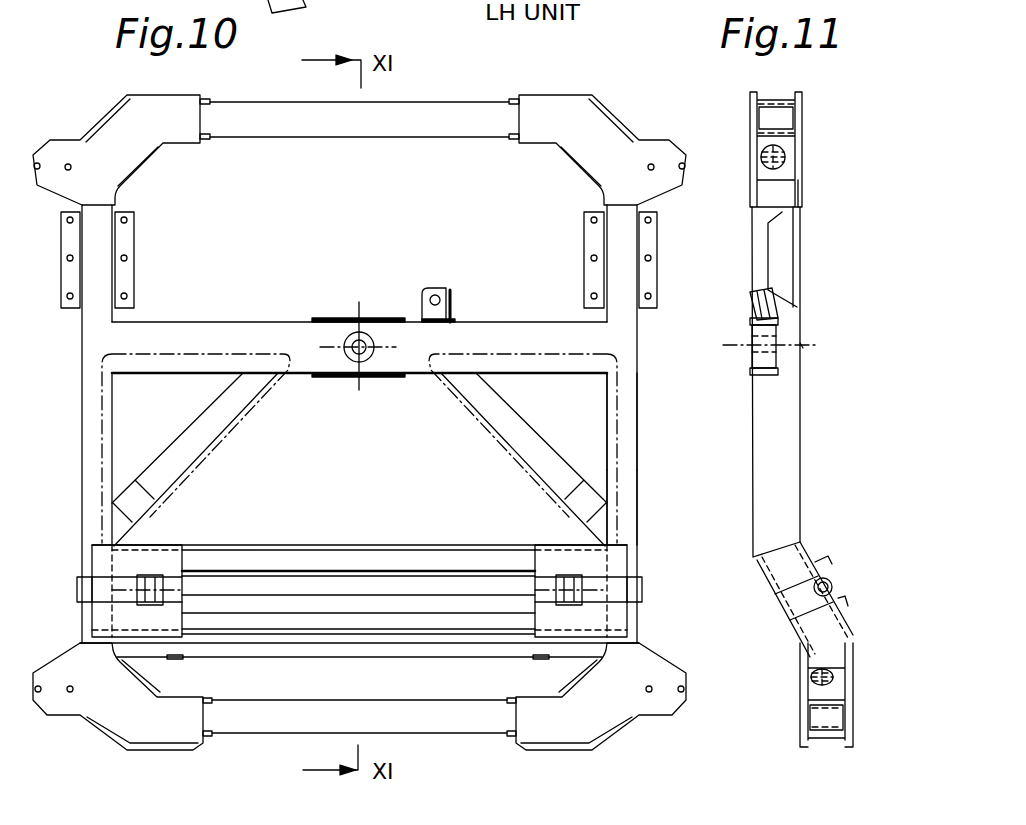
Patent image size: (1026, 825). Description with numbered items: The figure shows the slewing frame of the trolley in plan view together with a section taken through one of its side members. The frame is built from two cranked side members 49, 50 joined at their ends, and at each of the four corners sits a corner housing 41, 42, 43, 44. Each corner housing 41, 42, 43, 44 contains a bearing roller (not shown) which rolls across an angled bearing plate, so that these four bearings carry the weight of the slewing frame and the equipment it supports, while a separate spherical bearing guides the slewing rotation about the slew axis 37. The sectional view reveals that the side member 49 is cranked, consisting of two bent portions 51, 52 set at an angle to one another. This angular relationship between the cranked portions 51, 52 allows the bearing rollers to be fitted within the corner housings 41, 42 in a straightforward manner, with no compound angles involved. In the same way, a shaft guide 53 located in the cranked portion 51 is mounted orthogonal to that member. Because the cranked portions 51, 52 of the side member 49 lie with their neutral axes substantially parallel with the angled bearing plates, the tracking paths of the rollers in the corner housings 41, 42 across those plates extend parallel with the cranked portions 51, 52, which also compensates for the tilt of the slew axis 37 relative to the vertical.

In FIG. 10, the slew axis 37 is at (365, 340).
In FIG. 10, the corner housing 41 is at (125, 152).
In FIG. 10, the corner housing 42 is at (590, 147).
In FIG. 10, the corner housing 43 is at (130, 693).
In FIG. 10, the corner housing 44 is at (600, 693).
In FIG. 10, the cranked side member 49 is at (618, 487).
In FIG. 11, the cranked side member 49 is at (803, 485).
In FIG. 10, the cranked side member 50 is at (105, 337).
In FIG. 10, the cranked portion 51 is at (628, 397).
In FIG. 11, the cranked portion 51 is at (803, 412).
In FIG. 10, the cranked portion 52 is at (638, 637).
In FIG. 11, the cranked portion 52 is at (853, 683).
In FIG. 10, the shaft guide 53 is at (344, 337).
In FIG. 11, the shaft guide 53 is at (751, 340).